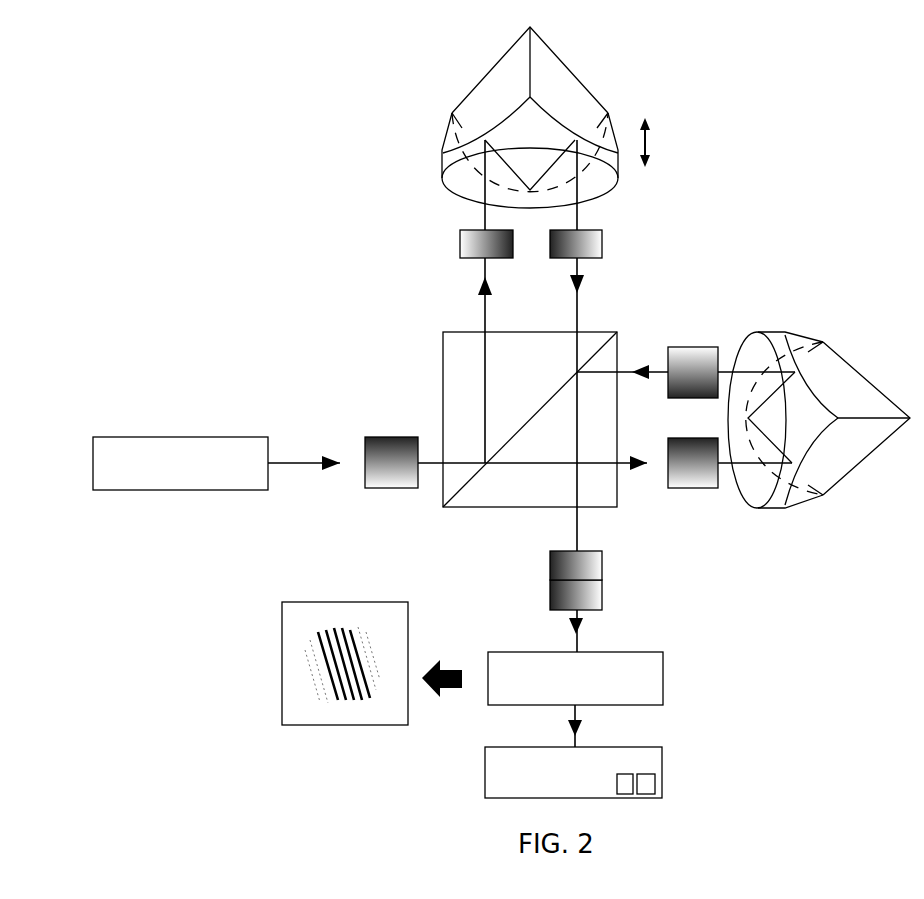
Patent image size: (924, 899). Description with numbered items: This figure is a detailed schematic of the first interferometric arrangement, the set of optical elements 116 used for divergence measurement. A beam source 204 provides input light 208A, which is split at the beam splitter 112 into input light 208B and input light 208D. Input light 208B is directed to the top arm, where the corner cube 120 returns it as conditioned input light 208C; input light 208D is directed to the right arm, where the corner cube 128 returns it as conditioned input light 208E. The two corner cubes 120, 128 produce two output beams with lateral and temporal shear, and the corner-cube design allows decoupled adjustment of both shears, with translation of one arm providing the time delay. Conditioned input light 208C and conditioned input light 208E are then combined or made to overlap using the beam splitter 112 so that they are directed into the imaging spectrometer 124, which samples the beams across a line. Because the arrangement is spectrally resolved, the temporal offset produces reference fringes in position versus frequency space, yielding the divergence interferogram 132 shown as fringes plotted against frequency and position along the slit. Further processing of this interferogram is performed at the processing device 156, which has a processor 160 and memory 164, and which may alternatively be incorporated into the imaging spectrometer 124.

The set of optical elements 116 is at (680, 82).
The corner cube 120 is at (573, 75).
The corner cube 128 is at (848, 362).
The beam splitter 112 is at (613, 336).
The beam source 204 is at (93, 437).
The input light 208A is at (365, 463).
The input light 208B is at (485, 383).
The conditioned input light 208C is at (577, 318).
The input light 208D is at (588, 465).
The conditioned input light 208E is at (618, 372).
The imaging spectrometer 124 is at (663, 652).
The processing device 156 is at (662, 775).
The processor 160 is at (648, 795).
The memory 164 is at (627, 795).
The divergence interferogram 132 is at (282, 602).